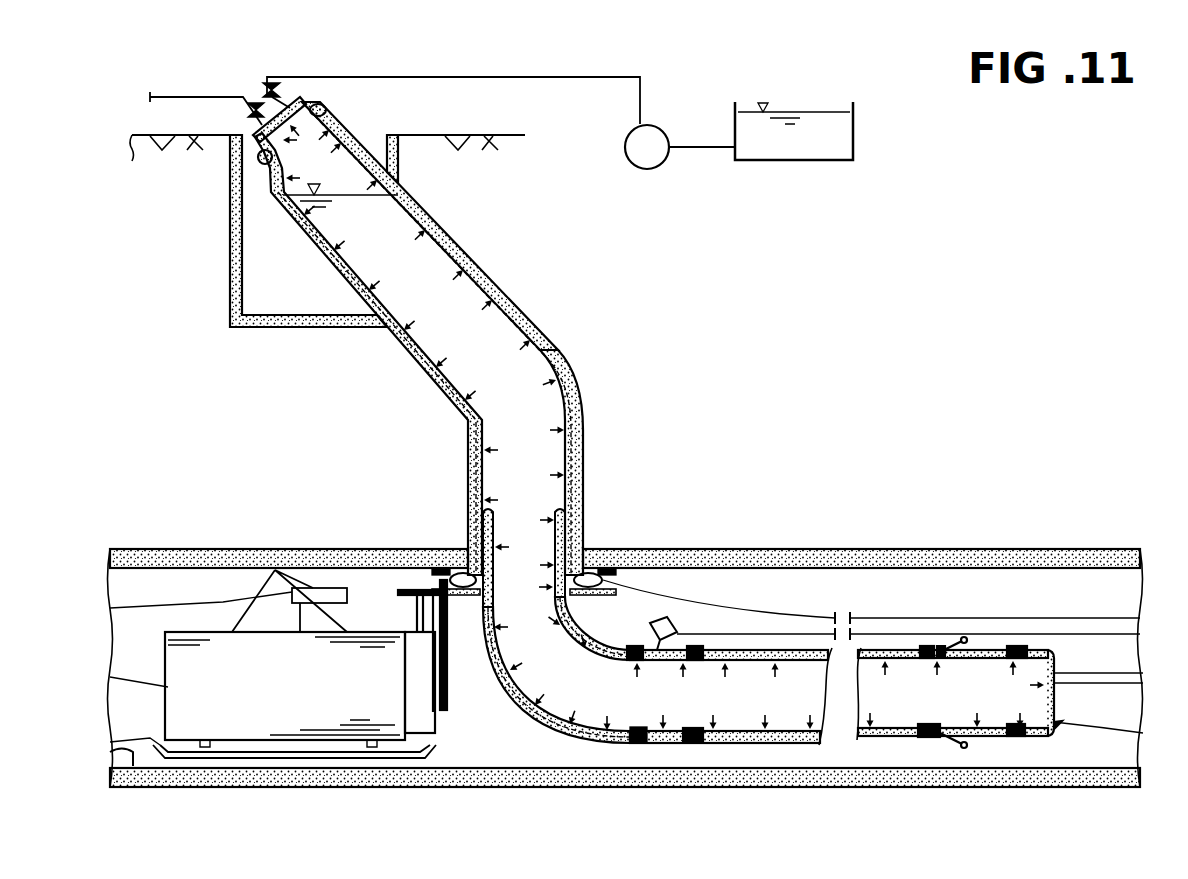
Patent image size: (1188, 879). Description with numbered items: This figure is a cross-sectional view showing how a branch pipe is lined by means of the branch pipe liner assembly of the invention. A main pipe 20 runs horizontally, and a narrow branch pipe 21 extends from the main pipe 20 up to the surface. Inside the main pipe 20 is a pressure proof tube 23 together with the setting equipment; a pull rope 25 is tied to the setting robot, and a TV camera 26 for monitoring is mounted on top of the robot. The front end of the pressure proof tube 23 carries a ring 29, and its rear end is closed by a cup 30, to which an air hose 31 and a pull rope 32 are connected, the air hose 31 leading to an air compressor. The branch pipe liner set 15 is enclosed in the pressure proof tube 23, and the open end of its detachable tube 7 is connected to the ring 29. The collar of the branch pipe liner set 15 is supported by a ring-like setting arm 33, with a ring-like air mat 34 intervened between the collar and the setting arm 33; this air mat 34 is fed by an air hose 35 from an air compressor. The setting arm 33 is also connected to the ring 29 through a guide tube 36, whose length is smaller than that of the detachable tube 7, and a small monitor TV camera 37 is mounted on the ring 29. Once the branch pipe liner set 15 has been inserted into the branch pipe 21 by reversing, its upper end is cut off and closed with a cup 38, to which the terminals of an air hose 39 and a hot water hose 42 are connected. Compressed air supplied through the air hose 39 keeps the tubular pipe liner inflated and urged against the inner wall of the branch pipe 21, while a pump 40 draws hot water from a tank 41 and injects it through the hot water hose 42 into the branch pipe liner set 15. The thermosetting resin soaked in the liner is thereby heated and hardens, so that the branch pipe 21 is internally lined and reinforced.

The detachable tube 7 is at (524, 526).
The branch pipe liner set 15 is at (345, 128).
The main pipe 20 is at (907, 549).
The branch pipe 21 is at (576, 372).
The pressure proof tube 23 is at (798, 650).
The pull rope 25 is at (132, 778).
The TV camera 26 is at (322, 588).
The ring 29 is at (660, 740).
The cup 30 is at (1054, 697).
The air hose 31 is at (1133, 672).
The pull rope 32 is at (1097, 738).
The setting arm 33 is at (434, 585).
The air mat 34 is at (620, 570).
The air hose 35 is at (965, 617).
The guide tube 36 is at (497, 688).
The small monitor TV camera 37 is at (683, 620).
The cup 38 is at (300, 93).
The air hose 39 is at (197, 97).
The pump 40 is at (645, 172).
The tank 41 is at (810, 162).
The hot water hose 42 is at (577, 73).